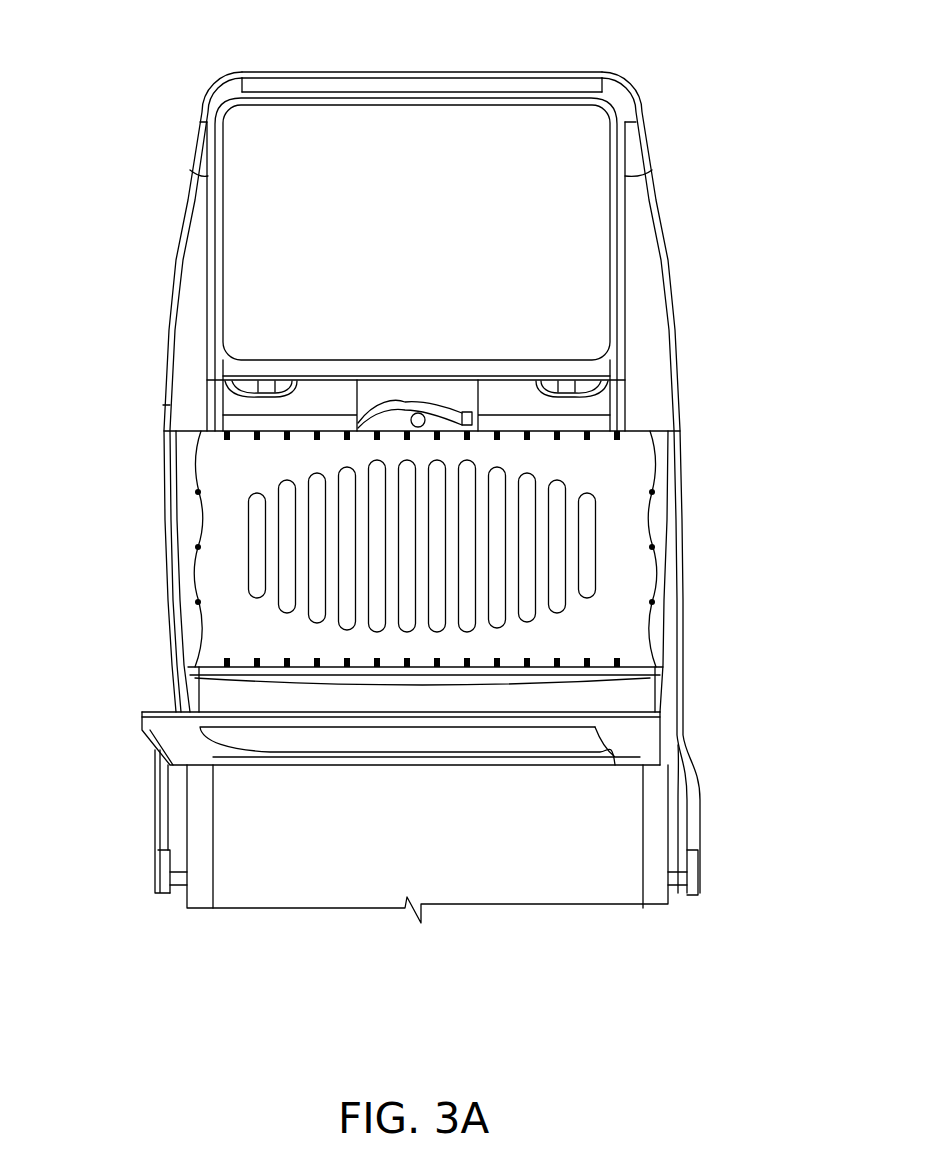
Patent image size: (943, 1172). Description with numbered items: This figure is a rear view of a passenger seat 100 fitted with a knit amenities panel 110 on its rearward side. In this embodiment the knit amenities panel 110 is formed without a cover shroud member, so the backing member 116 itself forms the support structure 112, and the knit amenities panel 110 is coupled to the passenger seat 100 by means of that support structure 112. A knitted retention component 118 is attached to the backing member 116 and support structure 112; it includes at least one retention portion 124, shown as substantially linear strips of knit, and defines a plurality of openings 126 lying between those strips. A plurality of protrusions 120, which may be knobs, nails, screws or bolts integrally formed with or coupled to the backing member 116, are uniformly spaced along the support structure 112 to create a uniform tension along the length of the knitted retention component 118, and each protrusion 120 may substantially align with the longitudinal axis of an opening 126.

The passenger seat 100 is at (134, 70).
The knit amenities panel 110 is at (710, 540).
The support structure 112 is at (660, 637).
The backing member 116 is at (660, 468).
The knitted retention component 118 is at (222, 460).
The protrusion 120 is at (590, 430).
The retention portion 124 is at (273, 584).
The opening 126 is at (257, 537).